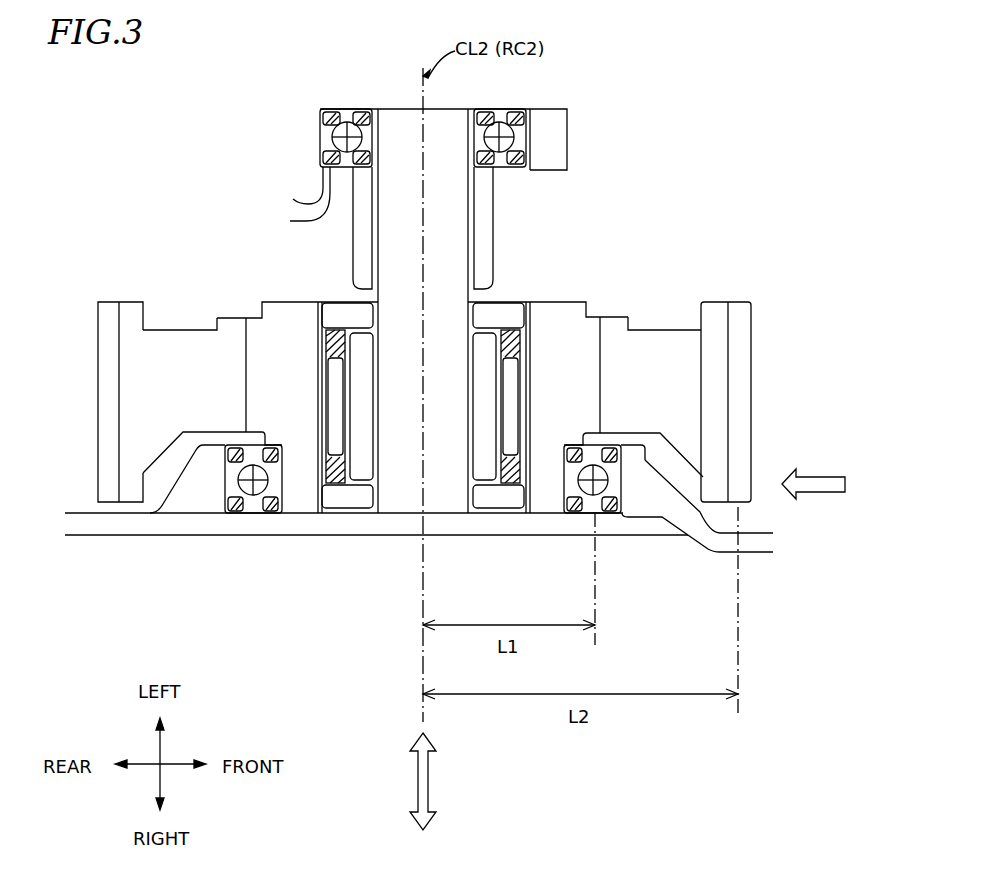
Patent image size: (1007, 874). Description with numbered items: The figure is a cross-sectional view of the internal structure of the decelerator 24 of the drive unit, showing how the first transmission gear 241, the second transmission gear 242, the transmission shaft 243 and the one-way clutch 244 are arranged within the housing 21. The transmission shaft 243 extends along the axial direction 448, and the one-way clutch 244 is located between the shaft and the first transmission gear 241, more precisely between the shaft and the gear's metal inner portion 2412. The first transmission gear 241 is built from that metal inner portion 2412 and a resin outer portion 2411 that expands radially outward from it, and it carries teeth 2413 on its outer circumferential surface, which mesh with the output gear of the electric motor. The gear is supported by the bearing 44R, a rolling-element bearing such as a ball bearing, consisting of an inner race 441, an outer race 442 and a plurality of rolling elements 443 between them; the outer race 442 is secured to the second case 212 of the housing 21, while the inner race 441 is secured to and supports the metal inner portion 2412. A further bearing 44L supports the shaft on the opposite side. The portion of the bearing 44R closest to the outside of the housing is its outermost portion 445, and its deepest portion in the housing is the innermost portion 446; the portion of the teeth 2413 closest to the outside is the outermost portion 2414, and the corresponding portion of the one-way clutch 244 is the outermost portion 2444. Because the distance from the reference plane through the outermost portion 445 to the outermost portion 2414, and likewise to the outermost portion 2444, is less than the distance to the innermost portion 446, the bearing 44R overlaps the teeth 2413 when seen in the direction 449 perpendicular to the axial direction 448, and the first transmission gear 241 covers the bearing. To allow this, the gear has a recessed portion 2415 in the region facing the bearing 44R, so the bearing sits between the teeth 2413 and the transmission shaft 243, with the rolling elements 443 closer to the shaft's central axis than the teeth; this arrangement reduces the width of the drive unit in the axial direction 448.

The decelerator 24 is at (698, 186).
The first transmission gear 241 is at (687, 242).
The resin outer portion 2411 is at (664, 340).
The metal inner portion 2412 is at (585, 304).
The teeth 2413 is at (738, 303).
The outermost portion 2414 is at (745, 509).
The recessed portion 2415 is at (167, 447).
The second transmission gear 242 is at (487, 222).
The transmission shaft 243 is at (447, 122).
The one-way clutch 244 is at (333, 372).
The outermost portion 2444 is at (353, 487).
The bearing 44L is at (323, 128).
The bearing 44R is at (315, 615).
The inner race 441 is at (280, 514).
The outer race 442 is at (225, 508).
The rolling elements 443 is at (245, 513).
The outermost portion 445 is at (610, 515).
The innermost portion 446 is at (618, 447).
The axial direction 448 is at (428, 780).
The direction perpendicular to the axial direction 449 is at (815, 482).
The second case 212 is at (112, 524).
The housing 21 is at (358, 527).